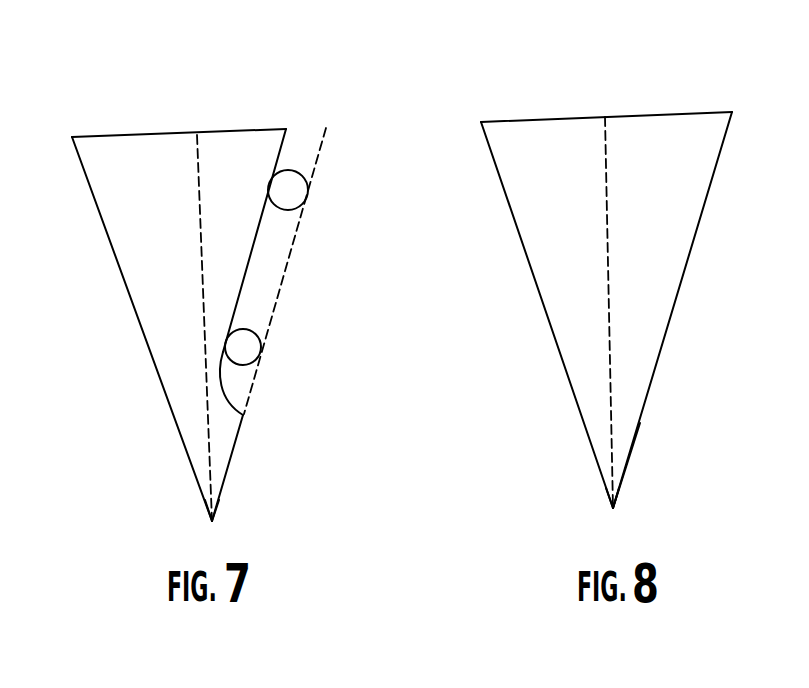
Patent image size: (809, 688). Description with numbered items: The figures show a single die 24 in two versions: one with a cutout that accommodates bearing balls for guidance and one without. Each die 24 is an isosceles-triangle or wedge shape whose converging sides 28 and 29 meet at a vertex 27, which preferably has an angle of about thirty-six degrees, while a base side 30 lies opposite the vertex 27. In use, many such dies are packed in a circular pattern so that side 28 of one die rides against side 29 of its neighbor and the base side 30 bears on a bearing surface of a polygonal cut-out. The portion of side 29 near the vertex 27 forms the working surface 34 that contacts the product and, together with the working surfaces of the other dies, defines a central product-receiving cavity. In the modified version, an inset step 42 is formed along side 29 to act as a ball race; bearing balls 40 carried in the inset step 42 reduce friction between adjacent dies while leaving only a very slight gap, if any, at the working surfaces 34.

In FIG. 7, the die 24 is at (195, 289).
In FIG. 8, the die 24 is at (613, 284).
In FIG. 7, the vertex 27 is at (212, 521).
In FIG. 8, the vertex 27 is at (613, 508).
In FIG. 7, the side 28 is at (94, 200).
In FIG. 8, the side 28 is at (519, 236).
In FIG. 7, the side 29 is at (252, 250).
In FIG. 8, the side 29 is at (703, 217).
In FIG. 7, the base side 30 is at (121, 137).
In FIG. 8, the base side 30 is at (703, 109).
In FIG. 7, the working surface 34 is at (232, 452).
In FIG. 8, the working surface 34 is at (640, 423).
In FIG. 7, the bearing ball 40 is at (288, 190).
In FIG. 7, the inset step 42 is at (263, 295).